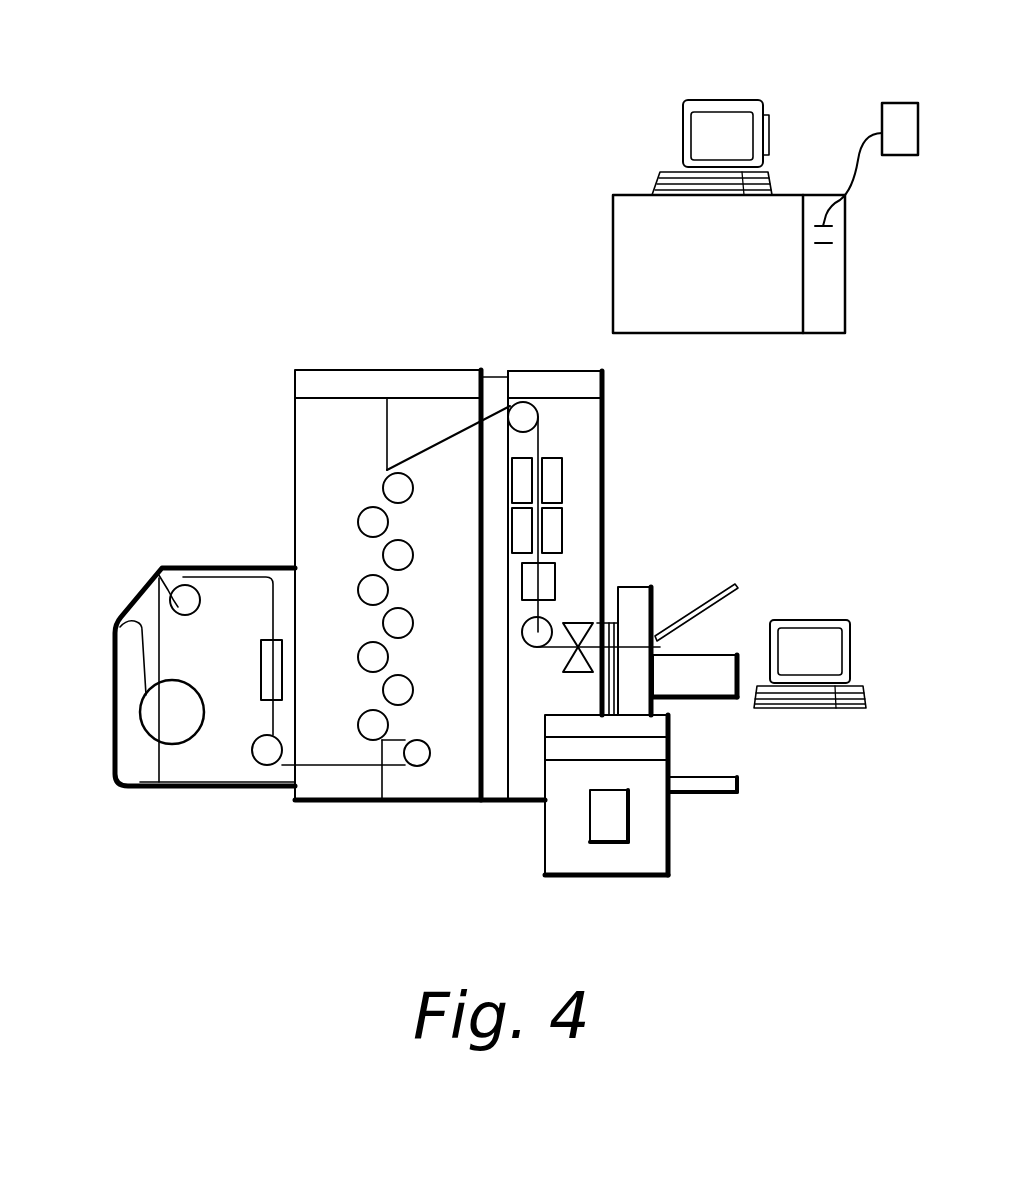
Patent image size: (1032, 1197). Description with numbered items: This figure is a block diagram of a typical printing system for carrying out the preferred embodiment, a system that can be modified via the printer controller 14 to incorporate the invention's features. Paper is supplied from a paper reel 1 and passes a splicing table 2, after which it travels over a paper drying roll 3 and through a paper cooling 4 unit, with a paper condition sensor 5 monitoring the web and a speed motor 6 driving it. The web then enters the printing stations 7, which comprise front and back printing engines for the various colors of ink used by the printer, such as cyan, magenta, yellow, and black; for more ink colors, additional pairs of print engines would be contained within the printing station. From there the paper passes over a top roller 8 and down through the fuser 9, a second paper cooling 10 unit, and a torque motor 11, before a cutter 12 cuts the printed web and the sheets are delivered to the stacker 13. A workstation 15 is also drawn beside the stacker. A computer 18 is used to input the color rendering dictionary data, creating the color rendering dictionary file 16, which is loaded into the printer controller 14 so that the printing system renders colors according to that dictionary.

The paper reel 1 is at (172, 712).
The splicing table 2 is at (145, 592).
The paper drying roll 3 is at (185, 598).
The paper cooling 4 is at (263, 672).
The paper condition sensor 5 is at (263, 757).
The speed motor 6 is at (415, 758).
The printing stations 7 is at (387, 542).
The top roller 8 is at (523, 415).
The fuser 9 is at (552, 480).
The paper cooling 10 is at (550, 580).
The torque motor 11 is at (580, 627).
The cutter 12 is at (603, 580).
The stacker 13 is at (683, 642).
The printer controller 14 is at (607, 860).
The computer workstation 15 is at (810, 622).
The color rendering dictionary file 16 is at (630, 817).
The computer 18 is at (818, 195).